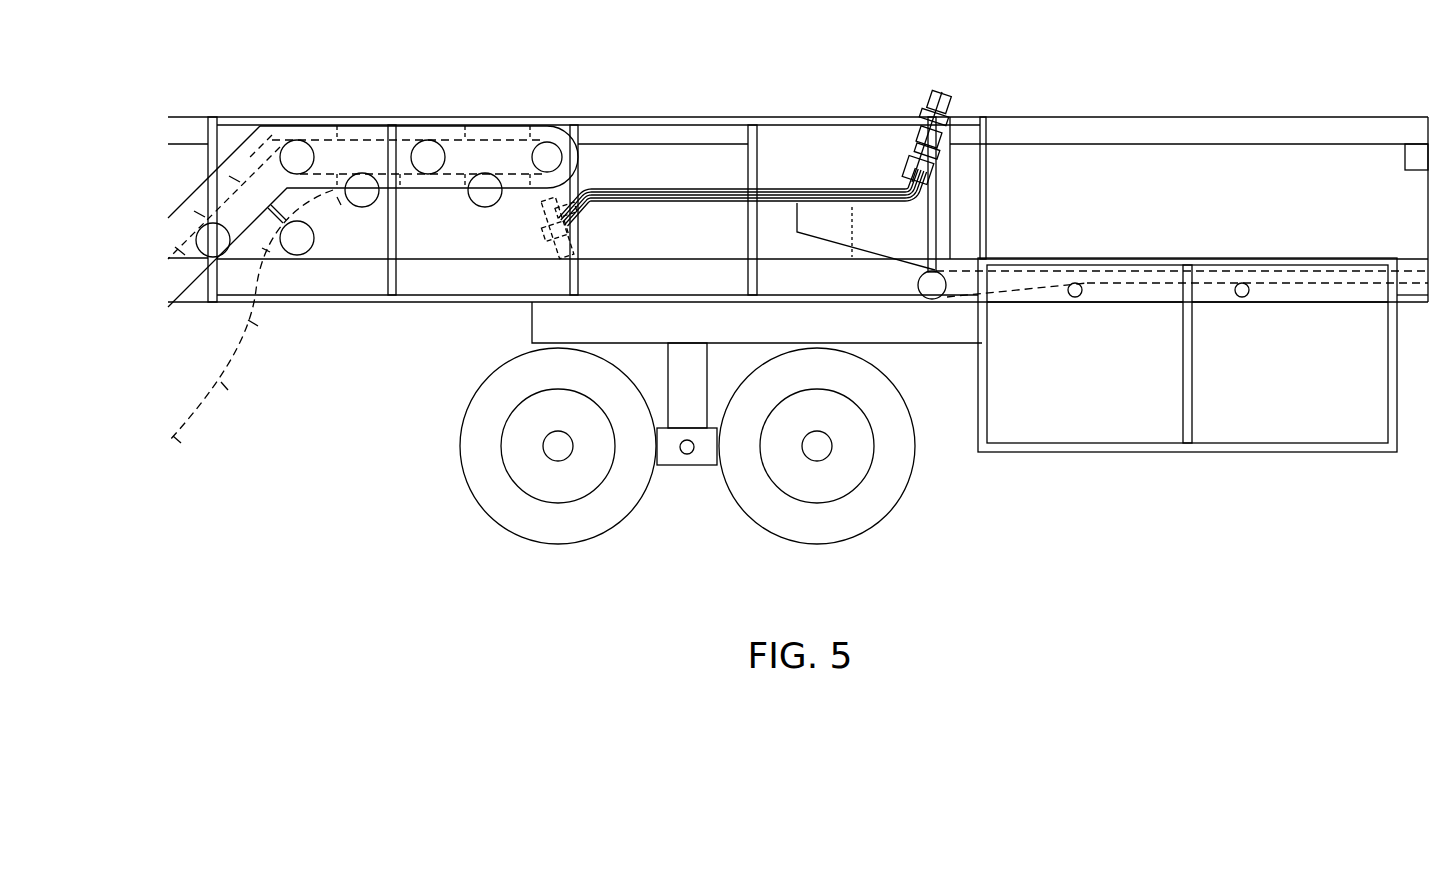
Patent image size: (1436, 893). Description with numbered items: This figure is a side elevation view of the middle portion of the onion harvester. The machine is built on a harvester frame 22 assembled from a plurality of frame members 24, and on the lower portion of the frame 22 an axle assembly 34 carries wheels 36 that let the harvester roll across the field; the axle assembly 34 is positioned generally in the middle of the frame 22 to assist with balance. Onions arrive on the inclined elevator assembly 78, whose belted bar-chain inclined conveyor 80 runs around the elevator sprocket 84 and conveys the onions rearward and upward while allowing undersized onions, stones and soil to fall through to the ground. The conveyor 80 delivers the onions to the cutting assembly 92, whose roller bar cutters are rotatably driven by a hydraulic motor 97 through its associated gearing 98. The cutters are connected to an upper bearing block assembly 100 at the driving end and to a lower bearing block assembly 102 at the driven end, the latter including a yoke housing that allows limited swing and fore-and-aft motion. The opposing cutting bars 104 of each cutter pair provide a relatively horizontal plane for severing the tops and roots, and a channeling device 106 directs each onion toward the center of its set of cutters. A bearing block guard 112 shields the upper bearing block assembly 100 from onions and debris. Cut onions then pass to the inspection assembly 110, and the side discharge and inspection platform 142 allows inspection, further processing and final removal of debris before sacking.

The harvester frame 22 is at (350, 303).
The frame members 24 is at (1075, 135).
The axle assembly 34 is at (688, 467).
The wheels 36 is at (873, 513).
The inclined elevator assembly 78 is at (240, 105).
The inclined conveyor 80 is at (477, 138).
The elevator sprocket 84 is at (541, 150).
The cutting assembly 92 is at (682, 186).
The hydraulic motor 97 is at (938, 90).
The gearing 98 is at (950, 117).
The upper bearing block assembly 100 is at (943, 168).
The lower bearing block assembly 102 is at (540, 240).
The cutting bars 104 is at (770, 187).
The channeling device 106 is at (615, 163).
The inspection assembly 110 is at (1123, 230).
The bearing block guard 112 is at (877, 180).
The side discharge and inspection platform 142 is at (1125, 449).